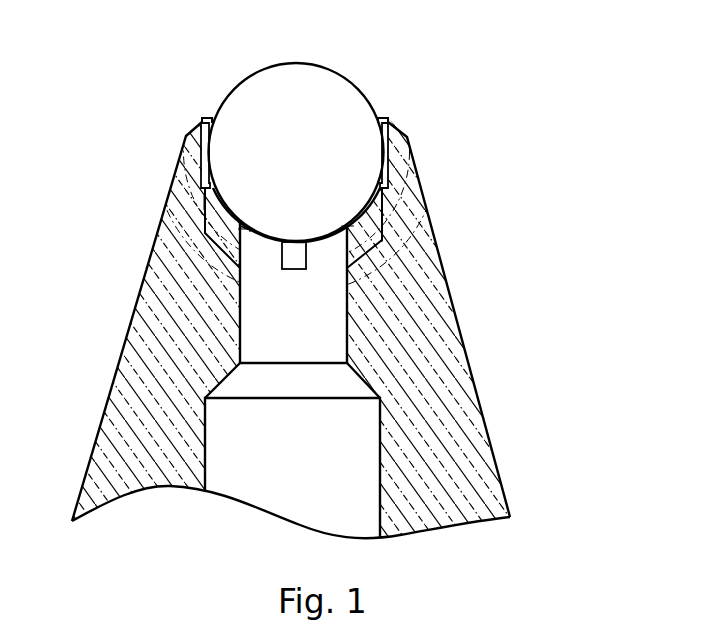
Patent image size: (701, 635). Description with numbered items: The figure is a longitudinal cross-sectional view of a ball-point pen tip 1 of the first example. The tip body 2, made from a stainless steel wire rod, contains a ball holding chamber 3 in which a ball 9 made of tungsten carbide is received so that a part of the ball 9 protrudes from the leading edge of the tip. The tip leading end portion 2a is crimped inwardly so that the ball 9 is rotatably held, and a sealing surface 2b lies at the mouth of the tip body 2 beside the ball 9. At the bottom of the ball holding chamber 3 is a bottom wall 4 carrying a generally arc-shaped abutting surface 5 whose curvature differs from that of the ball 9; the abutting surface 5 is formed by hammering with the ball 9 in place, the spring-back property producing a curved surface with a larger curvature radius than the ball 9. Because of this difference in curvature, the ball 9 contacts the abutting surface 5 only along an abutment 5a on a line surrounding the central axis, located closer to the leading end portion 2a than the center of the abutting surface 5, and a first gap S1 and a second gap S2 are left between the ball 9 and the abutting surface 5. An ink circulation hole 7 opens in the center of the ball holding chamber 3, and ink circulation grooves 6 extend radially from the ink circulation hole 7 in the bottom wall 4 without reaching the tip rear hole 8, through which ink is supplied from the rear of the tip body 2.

The ball-point pen tip 1 is at (337, 292).
The tip body 2 is at (433, 363).
The tip leading end portion 2a is at (387, 124).
The sealing surface 2b is at (203, 121).
The ball holding chamber 3 is at (202, 176).
The bottom wall 4 is at (423, 193).
The abutting surface 5 is at (236, 232).
The abutment 5a is at (383, 219).
The ink circulation groove 6 is at (240, 233).
The ink circulation hole 7 is at (315, 292).
The tip rear hole 8 is at (280, 435).
The ball 9 is at (237, 97).
The first gap S1 is at (362, 242).
The second gap S2 is at (200, 196).